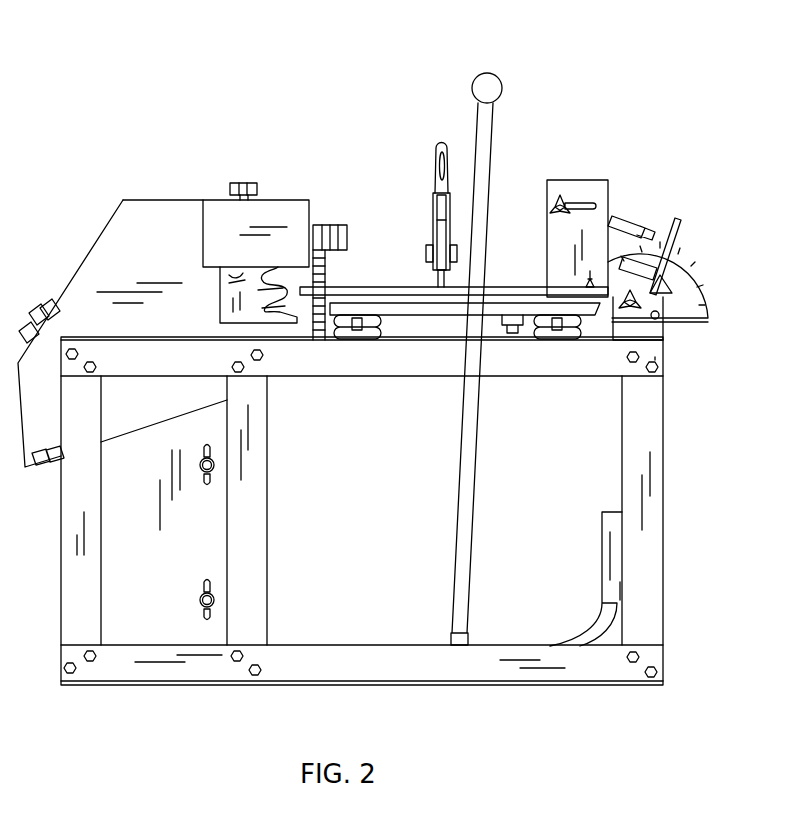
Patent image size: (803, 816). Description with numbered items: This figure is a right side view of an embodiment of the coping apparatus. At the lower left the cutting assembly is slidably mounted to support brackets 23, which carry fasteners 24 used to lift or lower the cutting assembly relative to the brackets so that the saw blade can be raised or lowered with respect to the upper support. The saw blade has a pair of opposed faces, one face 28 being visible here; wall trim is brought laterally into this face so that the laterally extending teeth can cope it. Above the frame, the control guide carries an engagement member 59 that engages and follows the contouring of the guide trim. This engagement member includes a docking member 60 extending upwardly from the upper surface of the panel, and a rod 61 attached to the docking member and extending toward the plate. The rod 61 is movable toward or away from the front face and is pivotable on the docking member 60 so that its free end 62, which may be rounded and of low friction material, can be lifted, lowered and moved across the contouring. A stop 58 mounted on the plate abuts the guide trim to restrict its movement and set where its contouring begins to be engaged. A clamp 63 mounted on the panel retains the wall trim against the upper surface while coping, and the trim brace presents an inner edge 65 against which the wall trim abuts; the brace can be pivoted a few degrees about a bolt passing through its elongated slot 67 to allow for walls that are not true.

The support brackets 23 is at (133, 613).
The fasteners 24 is at (200, 608).
The face of the saw blade 28 is at (237, 270).
The stop 58 is at (645, 255).
The engagement member 59 is at (528, 183).
The docking member 60 is at (580, 180).
The rod 61 is at (615, 212).
The free end 62 is at (662, 222).
The clamp 63 is at (445, 143).
The inner edge 65 is at (346, 288).
The elongated slot 67 is at (590, 290).